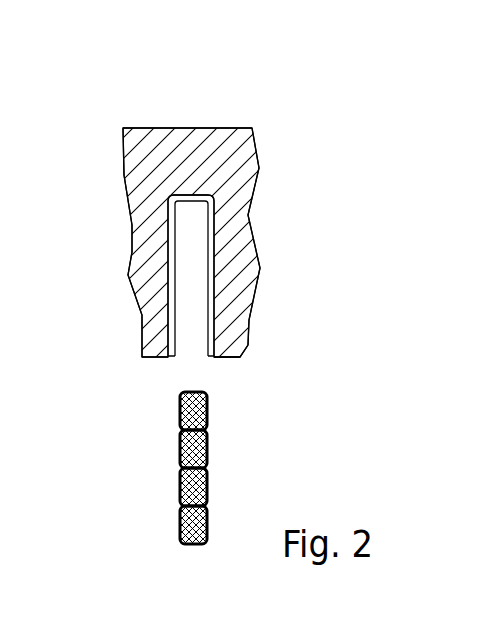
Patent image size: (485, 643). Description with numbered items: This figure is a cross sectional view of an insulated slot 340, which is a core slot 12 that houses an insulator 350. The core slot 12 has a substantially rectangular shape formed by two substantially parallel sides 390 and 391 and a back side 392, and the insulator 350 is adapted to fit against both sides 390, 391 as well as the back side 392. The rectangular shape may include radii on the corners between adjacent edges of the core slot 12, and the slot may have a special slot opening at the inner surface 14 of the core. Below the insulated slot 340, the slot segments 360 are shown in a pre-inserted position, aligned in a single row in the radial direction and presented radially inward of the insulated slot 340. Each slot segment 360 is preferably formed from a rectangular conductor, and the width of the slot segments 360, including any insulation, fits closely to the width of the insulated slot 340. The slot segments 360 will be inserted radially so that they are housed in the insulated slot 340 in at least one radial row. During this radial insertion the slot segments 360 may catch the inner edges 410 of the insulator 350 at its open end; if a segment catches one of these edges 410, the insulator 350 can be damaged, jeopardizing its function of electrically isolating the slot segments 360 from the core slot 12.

The insulated slot 340 is at (240, 105).
The back side 392 is at (207, 188).
The side 391 is at (248, 224).
The side 390 is at (165, 260).
The insulator 350 is at (214, 296).
The core slot 12 is at (190, 218).
The inner surface 14 is at (237, 338).
The inner edges 410 is at (171, 358).
The slot segments 360 is at (180, 446).